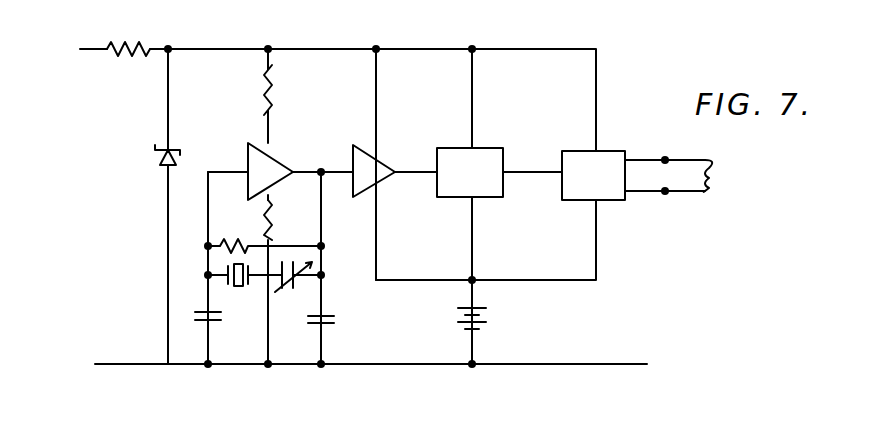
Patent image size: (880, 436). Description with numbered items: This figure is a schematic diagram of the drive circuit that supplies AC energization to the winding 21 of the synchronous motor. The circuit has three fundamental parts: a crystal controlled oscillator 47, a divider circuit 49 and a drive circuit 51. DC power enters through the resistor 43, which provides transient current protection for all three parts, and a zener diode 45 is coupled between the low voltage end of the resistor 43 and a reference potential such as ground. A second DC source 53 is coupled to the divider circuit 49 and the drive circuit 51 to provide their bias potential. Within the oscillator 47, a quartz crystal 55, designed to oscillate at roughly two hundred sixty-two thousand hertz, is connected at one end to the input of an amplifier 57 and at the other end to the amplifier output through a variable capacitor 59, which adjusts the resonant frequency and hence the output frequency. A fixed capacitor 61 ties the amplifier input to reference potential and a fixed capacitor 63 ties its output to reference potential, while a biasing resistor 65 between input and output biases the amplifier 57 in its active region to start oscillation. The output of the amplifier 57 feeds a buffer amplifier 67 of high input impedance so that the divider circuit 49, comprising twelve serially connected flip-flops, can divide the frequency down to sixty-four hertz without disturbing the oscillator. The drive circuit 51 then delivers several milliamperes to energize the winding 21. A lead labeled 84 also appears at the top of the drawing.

The winding 21 is at (712, 160).
The resistor 43 is at (134, 45).
The zener diode 45 is at (160, 164).
The crystal controlled oscillator 47 is at (325, 276).
The divider circuit 49 is at (483, 184).
The drive circuit 51 is at (606, 184).
The second DC source 53 is at (482, 316).
The quartz crystal 55 is at (241, 287).
The amplifier 57 is at (277, 184).
The variable capacitor 59 is at (290, 291).
The fixed capacitor 61 is at (212, 322).
The fixed capacitor 63 is at (326, 324).
The biasing resistor 65 is at (244, 218).
The buffer amplifier 67 is at (380, 184).
The lead 84 is at (292, 0).